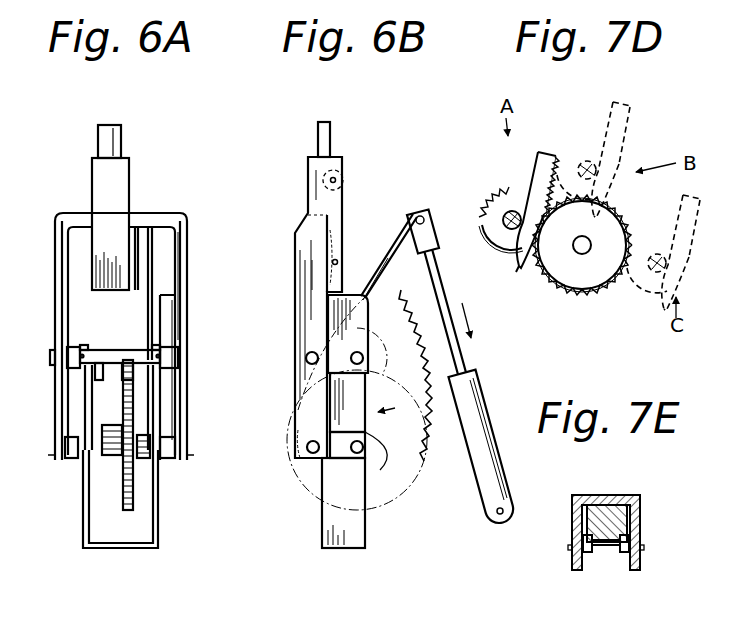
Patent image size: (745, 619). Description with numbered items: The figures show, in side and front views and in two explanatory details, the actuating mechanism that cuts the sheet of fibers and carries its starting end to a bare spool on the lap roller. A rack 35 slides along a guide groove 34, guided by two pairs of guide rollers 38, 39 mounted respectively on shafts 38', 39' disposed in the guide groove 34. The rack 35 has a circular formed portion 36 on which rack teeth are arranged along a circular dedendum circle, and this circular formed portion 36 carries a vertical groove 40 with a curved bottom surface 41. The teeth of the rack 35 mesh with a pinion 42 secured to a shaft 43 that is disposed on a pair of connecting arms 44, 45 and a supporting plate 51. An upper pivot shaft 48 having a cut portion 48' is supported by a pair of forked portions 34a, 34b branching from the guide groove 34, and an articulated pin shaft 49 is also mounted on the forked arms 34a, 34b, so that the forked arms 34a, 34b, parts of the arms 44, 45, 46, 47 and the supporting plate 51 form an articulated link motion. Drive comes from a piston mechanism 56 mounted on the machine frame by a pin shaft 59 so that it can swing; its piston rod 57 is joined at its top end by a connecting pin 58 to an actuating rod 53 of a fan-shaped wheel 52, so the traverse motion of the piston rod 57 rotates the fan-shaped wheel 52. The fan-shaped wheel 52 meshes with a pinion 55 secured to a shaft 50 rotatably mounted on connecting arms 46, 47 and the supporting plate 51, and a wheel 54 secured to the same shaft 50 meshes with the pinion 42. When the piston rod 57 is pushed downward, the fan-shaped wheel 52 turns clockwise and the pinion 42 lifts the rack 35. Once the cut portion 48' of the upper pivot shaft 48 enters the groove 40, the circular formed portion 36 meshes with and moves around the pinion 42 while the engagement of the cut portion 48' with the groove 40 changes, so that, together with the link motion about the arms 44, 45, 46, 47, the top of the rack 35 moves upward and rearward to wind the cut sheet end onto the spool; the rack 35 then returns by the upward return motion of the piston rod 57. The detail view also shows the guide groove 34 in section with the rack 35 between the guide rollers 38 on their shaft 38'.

In FIG. 6A, the guide groove 34 is at (130, 190).
In FIG. 7E, the guide groove 34 is at (640, 515).
In FIG. 6A, the forked portion 34a is at (180, 308).
In FIG. 6B, the forked portion 34a is at (297, 307).
In FIG. 6A, the forked portion 34b is at (58, 300).
In FIG. 6A, the rack 35 is at (121, 142).
In FIG. 6B, the rack 35 is at (330, 140).
In FIG. 7D, the rack 35 is at (549, 160).
In FIG. 7E, the rack 35 is at (630, 530).
In FIG. 7D, the circular formed portion 36 is at (493, 229).
In FIG. 7E, the circular formed portion 36 is at (580, 522).
In FIG. 6B, the guide roller 38 is at (356, 165).
In FIG. 7E, the guide roller 38 is at (605, 567).
In FIG. 6B, the shaft 38' is at (361, 185).
In FIG. 7E, the shaft 38' is at (610, 578).
In FIG. 6B, the guide roller 39 is at (351, 245).
In FIG. 6B, the shaft 39' is at (359, 253).
In FIG. 7D, the vertical groove 40 is at (516, 213).
In FIG. 7D, the curved bottom surface 41 is at (522, 279).
In FIG. 6A, the pinion 42 is at (95, 350).
In FIG. 6B, the pinion 42 is at (360, 330).
In FIG. 7D, the pinion 42 is at (553, 275).
In FIG. 6B, the shaft 43 is at (363, 358).
In FIG. 7D, the shaft 43 is at (589, 250).
In FIG. 6A, the connecting arm 44 is at (175, 360).
In FIG. 6B, the connecting arm 44 is at (380, 312).
In FIG. 6A, the connecting arm 45 is at (72, 362).
In FIG. 6A, the connecting arm 46 is at (170, 455).
In FIG. 6B, the connecting arm 46 is at (340, 460).
In FIG. 6A, the connecting arm 47 is at (72, 458).
In FIG. 6A, the upper pivot shaft 48 is at (190, 344).
In FIG. 6B, the upper pivot shaft 48 is at (281, 362).
In FIG. 7D, the upper pivot shaft 48 is at (499, 190).
In FIG. 6A, the cut portion 48' is at (75, 390).
In FIG. 6B, the articulated pin shaft 49 is at (307, 447).
In FIG. 6A, the shaft 50 is at (95, 430).
In FIG. 6B, the shaft 50 is at (365, 452).
In FIG. 6A, the supporting plate 51 is at (160, 535).
In FIG. 6B, the supporting plate 51 is at (362, 540).
In FIG. 6B, the fan-shaped wheel 52 is at (425, 382).
In FIG. 6A, the actuating rod 53 is at (152, 272).
In FIG. 6B, the actuating rod 53 is at (395, 252).
In FIG. 6A, the wheel 54 is at (133, 498).
In FIG. 6B, the wheel 54 is at (314, 480).
In FIG. 6A, the pinion 55 is at (145, 450).
In FIG. 6B, the piston mechanism 56 is at (480, 458).
In FIG. 6B, the piston rod 57 is at (446, 298).
In FIG. 6B, the connecting pin 58 is at (418, 216).
In FIG. 6B, the pin shaft 59 is at (497, 516).